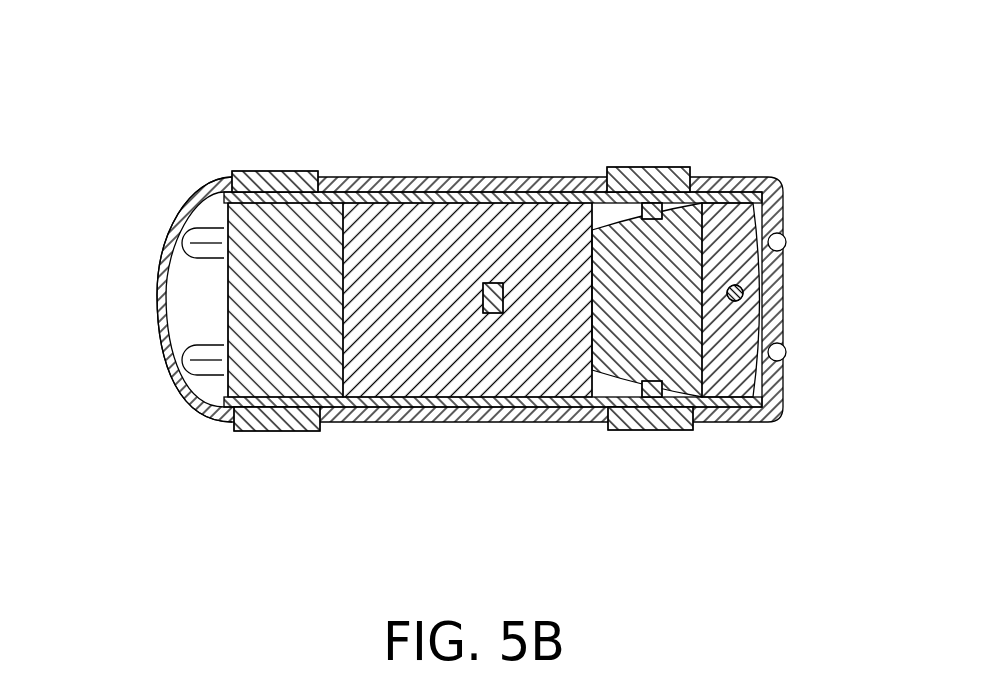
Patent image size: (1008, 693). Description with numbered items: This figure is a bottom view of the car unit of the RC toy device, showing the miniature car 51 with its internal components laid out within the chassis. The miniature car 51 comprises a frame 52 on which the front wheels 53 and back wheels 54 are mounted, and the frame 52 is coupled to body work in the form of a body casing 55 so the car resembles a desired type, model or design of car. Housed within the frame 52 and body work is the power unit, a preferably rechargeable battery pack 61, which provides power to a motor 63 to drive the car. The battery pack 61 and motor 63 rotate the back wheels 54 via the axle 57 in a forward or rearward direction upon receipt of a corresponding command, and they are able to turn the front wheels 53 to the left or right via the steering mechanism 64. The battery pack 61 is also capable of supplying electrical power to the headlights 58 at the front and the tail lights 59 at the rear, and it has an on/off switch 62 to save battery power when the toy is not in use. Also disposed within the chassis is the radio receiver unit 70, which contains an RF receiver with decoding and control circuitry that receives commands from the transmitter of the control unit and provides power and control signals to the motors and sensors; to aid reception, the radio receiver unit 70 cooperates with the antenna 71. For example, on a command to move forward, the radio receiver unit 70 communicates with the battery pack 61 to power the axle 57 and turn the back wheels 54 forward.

The miniature car 51 is at (160, 420).
The frame 52 is at (395, 407).
The front wheels 53 is at (285, 171).
The back wheels 54 is at (643, 167).
The body casing 55 is at (199, 178).
The axle 57 is at (653, 397).
The headlights 58 is at (183, 242).
The tail lights 59 is at (783, 238).
The battery pack 61 is at (392, 243).
The on/off switch 62 is at (493, 283).
The motor 63 is at (605, 340).
The steering mechanism 64 is at (247, 377).
The radio receiver unit 70 is at (733, 370).
The antenna 71 is at (733, 285).